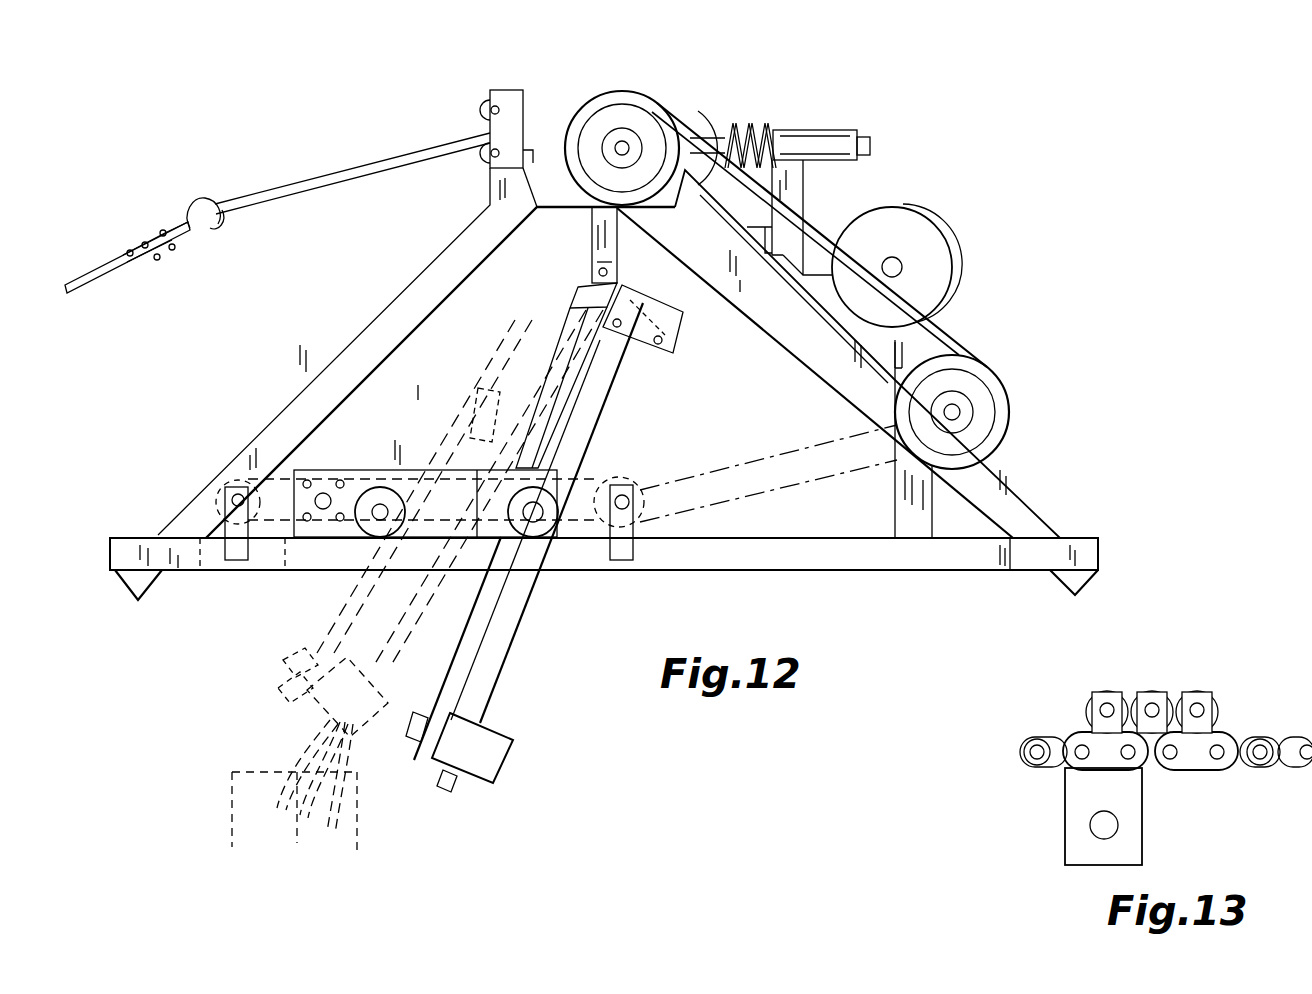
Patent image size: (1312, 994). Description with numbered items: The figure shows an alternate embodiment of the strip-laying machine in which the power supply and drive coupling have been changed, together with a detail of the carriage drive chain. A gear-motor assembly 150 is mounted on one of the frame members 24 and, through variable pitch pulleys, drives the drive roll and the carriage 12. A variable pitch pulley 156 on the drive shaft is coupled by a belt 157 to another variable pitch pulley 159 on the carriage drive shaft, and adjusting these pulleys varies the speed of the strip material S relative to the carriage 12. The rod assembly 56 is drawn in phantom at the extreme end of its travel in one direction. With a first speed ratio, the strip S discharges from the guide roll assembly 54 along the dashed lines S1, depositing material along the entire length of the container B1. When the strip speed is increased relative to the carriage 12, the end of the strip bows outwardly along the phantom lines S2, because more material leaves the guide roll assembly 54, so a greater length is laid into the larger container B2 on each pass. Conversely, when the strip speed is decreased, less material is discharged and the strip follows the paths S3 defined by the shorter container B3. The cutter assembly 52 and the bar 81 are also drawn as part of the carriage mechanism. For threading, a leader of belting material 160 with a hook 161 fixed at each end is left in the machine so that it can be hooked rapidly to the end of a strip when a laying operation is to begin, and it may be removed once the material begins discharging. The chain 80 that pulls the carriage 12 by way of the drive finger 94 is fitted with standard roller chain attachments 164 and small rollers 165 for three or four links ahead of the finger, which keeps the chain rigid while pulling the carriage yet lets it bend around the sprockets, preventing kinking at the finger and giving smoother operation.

In FIG. 12, the carriage 12 is at (408, 458).
In FIG. 12, the frame member 24 is at (405, 302).
In FIG. 12, the cutter assembly 52 is at (572, 295).
In FIG. 12, the guide roll assembly 54 is at (370, 697).
In FIG. 12, the rod assembly 56 is at (353, 610).
In FIG. 13, the chain 80 is at (1037, 763).
In FIG. 12, the pivot bar 81 is at (795, 480).
In FIG. 13, the drive finger 94 is at (1120, 855).
In FIG. 12, the gear-motor assembly 150 is at (953, 242).
In FIG. 12, the variable pitch pulley 156 is at (651, 108).
In FIG. 12, the belt 157 is at (750, 320).
In FIG. 12, the variable pitch pulley 159 is at (1003, 397).
In FIG. 12, the leader of belting material 160 is at (95, 272).
In FIG. 12, the hook 161 is at (205, 195).
In FIG. 13, the roller chain attachments 164 is at (1088, 733).
In FIG. 13, the small rollers 165 is at (1175, 693).
In FIG. 12, the strip material S is at (447, 148).
In FIG. 12, the strip path S1 is at (297, 817).
In FIG. 12, the strip path S2 is at (297, 753).
In FIG. 12, the strip path S3 is at (347, 835).
In FIG. 12, the container B1 is at (293, 807).
In FIG. 12, the container B2 is at (228, 815).
In FIG. 12, the container B3 is at (360, 817).